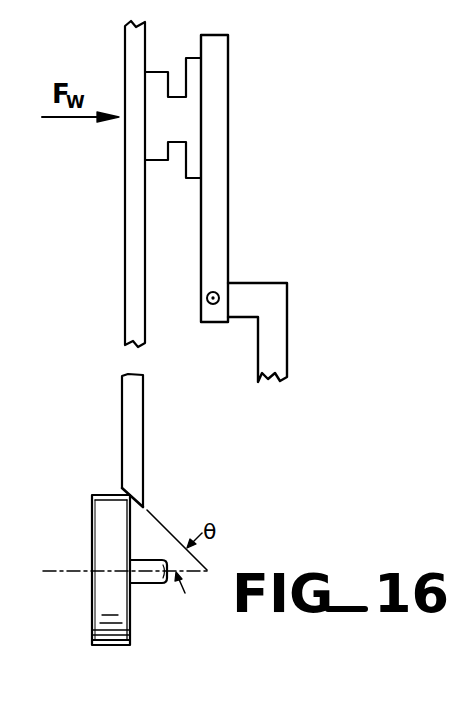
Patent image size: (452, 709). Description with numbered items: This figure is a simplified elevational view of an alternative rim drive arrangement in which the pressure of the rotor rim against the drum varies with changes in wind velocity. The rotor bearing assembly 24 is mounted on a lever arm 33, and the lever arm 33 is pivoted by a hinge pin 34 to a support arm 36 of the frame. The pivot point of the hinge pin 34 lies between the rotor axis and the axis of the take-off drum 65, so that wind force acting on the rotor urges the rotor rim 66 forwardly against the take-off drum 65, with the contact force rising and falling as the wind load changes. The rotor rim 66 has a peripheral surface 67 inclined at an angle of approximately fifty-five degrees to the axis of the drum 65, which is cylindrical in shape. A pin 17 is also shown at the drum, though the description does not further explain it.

The pin 17 is at (150, 588).
The rotor bearing assembly 24 is at (193, 76).
The lever arm 33 is at (215, 212).
The hinge pin 34 is at (212, 305).
The support arm 36 is at (277, 352).
The take-off drum 65 is at (102, 600).
The rotor rim 66 is at (143, 431).
The peripheral surface 67 is at (122, 490).